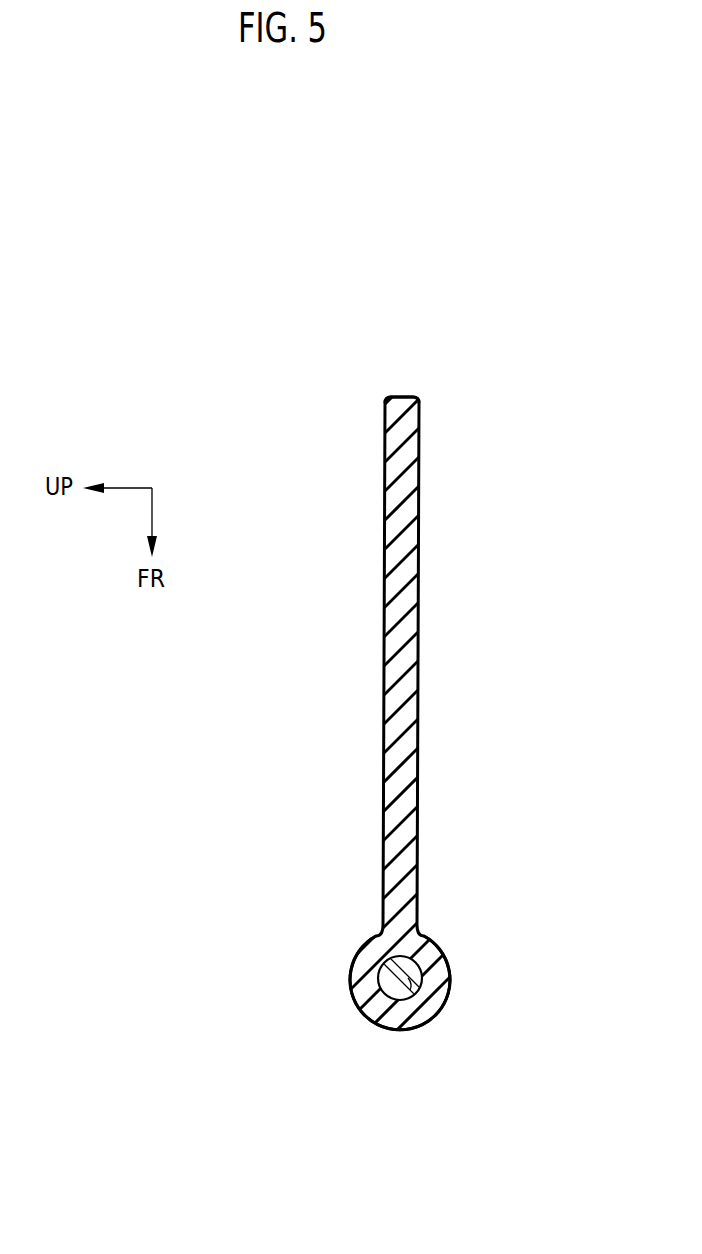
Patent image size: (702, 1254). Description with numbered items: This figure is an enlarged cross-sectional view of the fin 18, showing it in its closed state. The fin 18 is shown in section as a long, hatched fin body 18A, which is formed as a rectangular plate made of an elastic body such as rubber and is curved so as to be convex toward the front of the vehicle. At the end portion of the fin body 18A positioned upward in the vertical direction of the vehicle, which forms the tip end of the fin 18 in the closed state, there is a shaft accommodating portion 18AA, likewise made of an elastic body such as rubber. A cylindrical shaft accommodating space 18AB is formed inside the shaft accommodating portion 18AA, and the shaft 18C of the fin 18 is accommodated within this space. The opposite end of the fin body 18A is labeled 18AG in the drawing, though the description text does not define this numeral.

The fin 18 is at (447, 764).
The fin body 18A is at (418, 705).
The arm tip end 18AG is at (402, 403).
The shaft accommodating portion 18AA is at (442, 957).
The shaft accommodating space 18AB is at (420, 980).
The shaft 18C is at (390, 983).